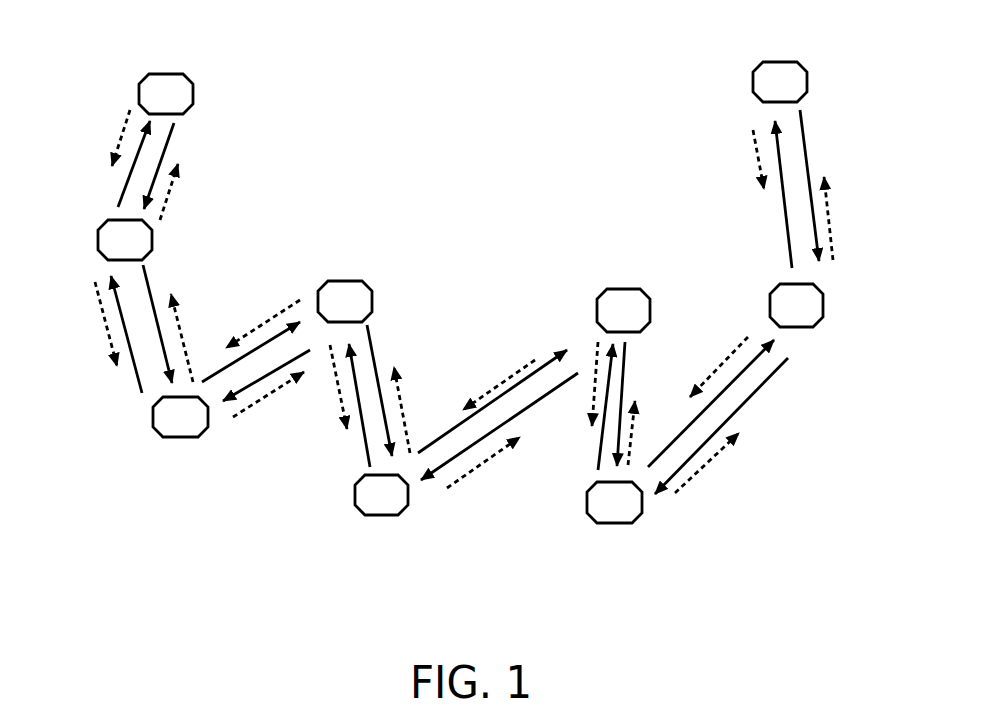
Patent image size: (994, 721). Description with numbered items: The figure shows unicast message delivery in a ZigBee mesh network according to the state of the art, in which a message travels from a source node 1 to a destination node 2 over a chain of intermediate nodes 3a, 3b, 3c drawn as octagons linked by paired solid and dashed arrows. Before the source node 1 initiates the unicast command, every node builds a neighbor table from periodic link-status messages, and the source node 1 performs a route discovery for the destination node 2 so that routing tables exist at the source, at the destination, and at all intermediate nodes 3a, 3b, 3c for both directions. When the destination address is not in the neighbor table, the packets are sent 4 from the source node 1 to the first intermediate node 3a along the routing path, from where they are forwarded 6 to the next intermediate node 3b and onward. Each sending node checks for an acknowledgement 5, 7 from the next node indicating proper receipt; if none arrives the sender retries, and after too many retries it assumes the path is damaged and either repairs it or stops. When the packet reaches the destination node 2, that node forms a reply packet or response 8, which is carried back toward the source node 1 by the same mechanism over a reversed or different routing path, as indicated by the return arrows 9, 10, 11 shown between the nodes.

The source node 1 is at (214, 64).
The destination node 2 is at (719, 65).
The first intermediate node 3a is at (91, 201).
The intermediate node 3b is at (153, 468).
The intermediate node 3c is at (412, 272).
The packet transmission to first intermediate node 4 is at (214, 150).
The acknowledgement 5 is at (211, 178).
The packet forwarding to next intermediate node 6 is at (198, 296).
The acknowledgement 7 is at (226, 327).
The reply packet or response 8 is at (859, 184).
The return communication link 9 is at (886, 218).
The communication link 10 is at (772, 426).
The return communication link 11 is at (720, 508).